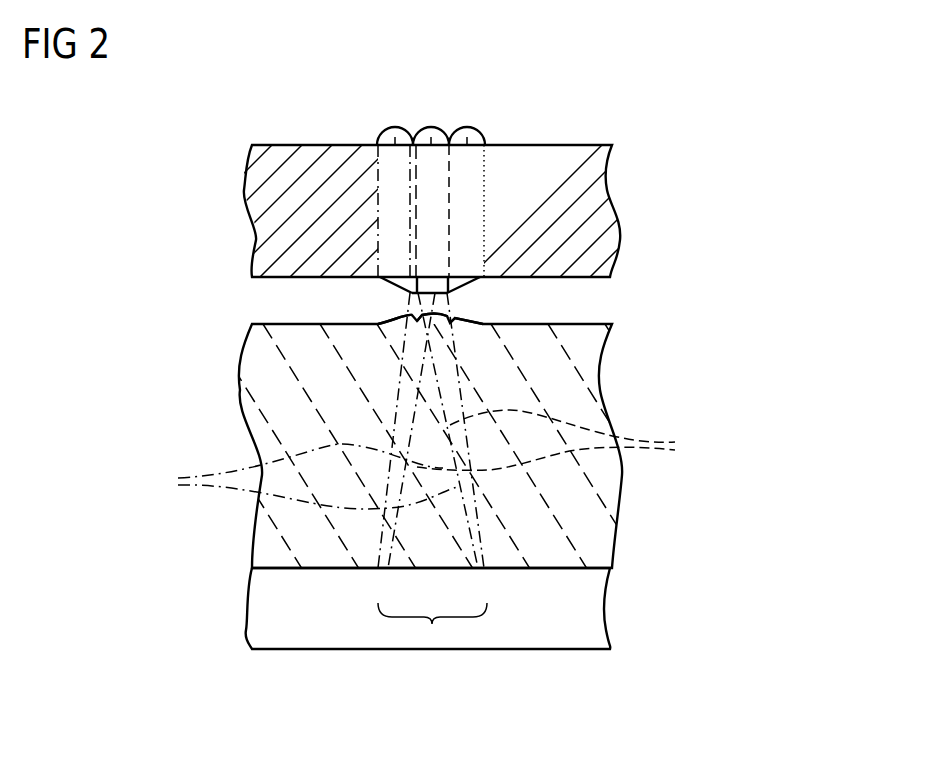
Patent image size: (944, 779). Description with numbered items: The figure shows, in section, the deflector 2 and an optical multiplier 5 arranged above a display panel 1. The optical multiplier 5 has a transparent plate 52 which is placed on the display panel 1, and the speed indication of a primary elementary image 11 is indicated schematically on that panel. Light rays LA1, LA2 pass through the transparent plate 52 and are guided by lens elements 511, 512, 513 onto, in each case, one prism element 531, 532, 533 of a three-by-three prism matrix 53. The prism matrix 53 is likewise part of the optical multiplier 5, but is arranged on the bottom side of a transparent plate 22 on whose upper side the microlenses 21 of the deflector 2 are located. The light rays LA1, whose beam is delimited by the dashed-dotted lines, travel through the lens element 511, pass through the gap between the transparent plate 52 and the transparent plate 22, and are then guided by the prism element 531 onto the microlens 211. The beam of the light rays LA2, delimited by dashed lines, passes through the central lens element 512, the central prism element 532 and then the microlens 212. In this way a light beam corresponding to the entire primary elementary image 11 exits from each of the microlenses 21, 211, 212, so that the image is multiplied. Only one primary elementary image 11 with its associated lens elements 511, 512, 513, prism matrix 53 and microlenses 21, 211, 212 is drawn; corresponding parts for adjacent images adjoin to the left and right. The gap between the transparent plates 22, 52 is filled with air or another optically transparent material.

The display panel 1 is at (519, 651).
The primary elementary image 11 is at (432, 624).
The deflector 2 is at (466, 180).
The microlenses 21 is at (467, 137).
The microlens 211 is at (396, 137).
The microlens 212 is at (430, 137).
The transparent plate 22 is at (555, 178).
The optical multiplier 5 is at (457, 422).
The lens element 511 is at (402, 326).
The central lens element 512 is at (440, 322).
The lens element 513 is at (462, 326).
The transparent plate 52 is at (547, 510).
The prism matrix 53 is at (433, 261).
The prism element 531 is at (397, 277).
The central prism element 532 is at (433, 277).
The prism element 533 is at (460, 277).
The light rays LA1 is at (297, 476).
The light rays LA2 is at (572, 440).